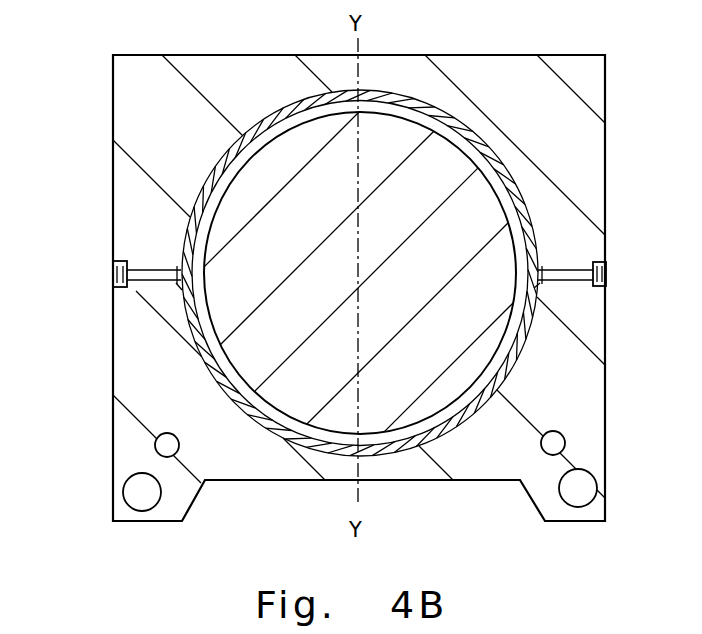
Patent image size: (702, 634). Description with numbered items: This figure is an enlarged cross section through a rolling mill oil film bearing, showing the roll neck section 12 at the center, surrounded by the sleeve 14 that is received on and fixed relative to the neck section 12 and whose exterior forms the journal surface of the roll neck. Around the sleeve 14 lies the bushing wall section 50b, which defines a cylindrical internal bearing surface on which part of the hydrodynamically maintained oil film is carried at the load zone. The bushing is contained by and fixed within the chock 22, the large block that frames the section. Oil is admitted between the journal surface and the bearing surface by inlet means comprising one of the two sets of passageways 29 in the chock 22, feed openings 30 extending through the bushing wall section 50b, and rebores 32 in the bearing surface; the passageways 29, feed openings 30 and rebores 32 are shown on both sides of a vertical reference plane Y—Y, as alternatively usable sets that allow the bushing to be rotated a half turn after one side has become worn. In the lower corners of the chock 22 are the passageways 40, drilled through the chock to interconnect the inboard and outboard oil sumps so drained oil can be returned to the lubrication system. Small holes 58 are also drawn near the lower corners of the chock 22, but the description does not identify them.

The neck section 12 is at (394, 248).
The sleeve 14 is at (283, 122).
The chock 22 is at (187, 72).
The passageways 29 is at (134, 286).
The feed openings 30 is at (178, 268).
The rebores 32 is at (178, 284).
The passageways 40 is at (142, 492).
The wall section 50b is at (455, 123).
The alignment hole 58 is at (167, 445).